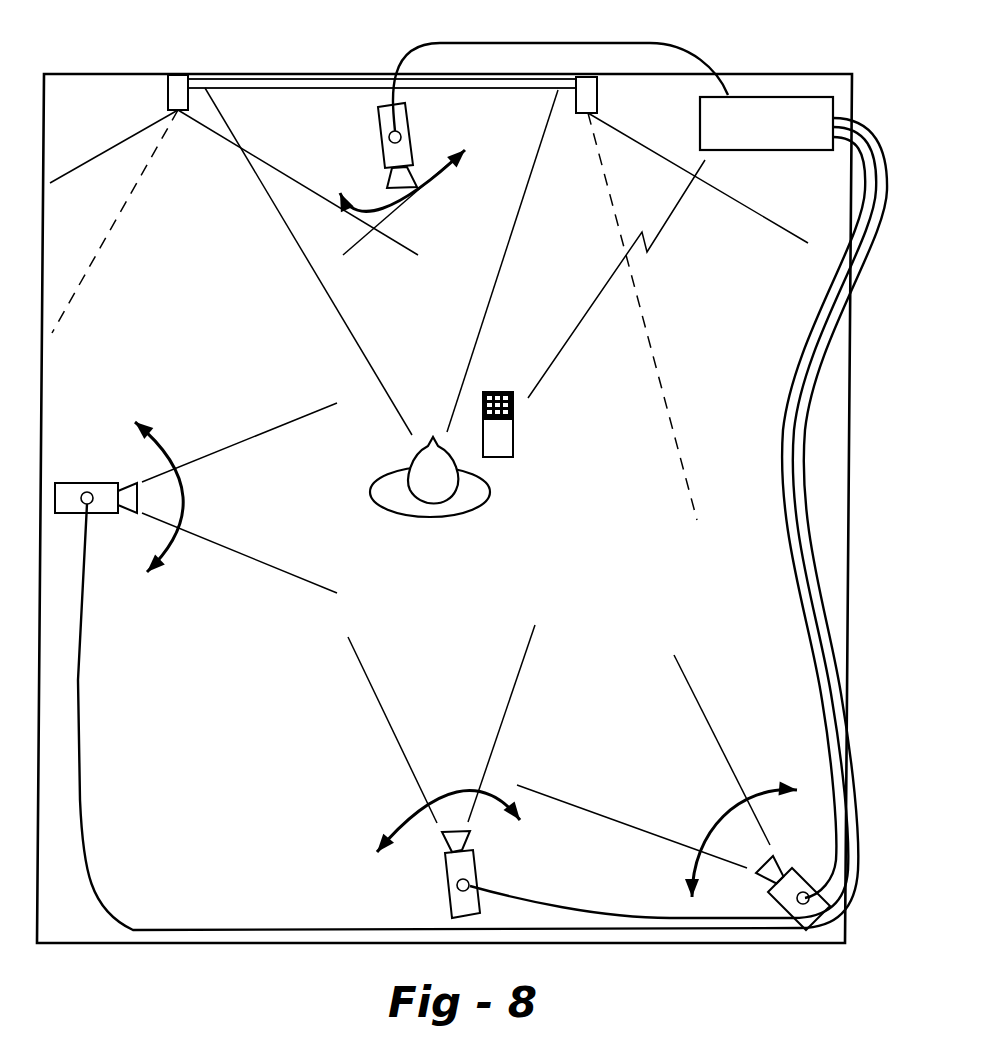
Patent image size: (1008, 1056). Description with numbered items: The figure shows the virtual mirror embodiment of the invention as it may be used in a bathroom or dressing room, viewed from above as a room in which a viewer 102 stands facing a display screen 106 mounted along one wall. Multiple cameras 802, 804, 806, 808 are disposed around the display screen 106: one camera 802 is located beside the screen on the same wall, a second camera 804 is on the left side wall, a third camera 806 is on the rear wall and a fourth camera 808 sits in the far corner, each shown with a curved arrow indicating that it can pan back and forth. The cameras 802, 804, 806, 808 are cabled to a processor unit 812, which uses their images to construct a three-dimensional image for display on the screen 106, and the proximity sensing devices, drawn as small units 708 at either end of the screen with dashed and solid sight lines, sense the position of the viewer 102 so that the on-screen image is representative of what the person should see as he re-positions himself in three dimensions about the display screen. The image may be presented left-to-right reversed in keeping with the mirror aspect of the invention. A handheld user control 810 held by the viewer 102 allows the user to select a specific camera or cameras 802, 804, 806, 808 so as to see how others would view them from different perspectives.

The viewer 102 is at (430, 501).
The display screen 106 is at (524, 90).
The sensors 708 is at (168, 88).
The camera 802 is at (375, 148).
The camera 804 is at (196, 498).
The camera 806 is at (441, 771).
The camera 808 is at (817, 935).
The user control 810 is at (525, 448).
The processor unit 812 is at (482, 486).